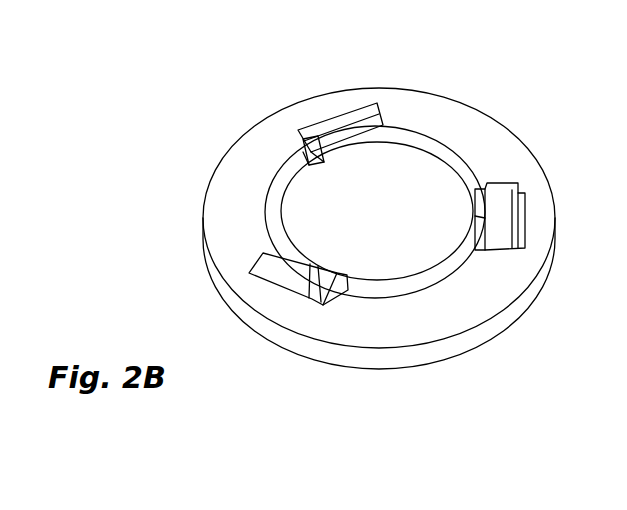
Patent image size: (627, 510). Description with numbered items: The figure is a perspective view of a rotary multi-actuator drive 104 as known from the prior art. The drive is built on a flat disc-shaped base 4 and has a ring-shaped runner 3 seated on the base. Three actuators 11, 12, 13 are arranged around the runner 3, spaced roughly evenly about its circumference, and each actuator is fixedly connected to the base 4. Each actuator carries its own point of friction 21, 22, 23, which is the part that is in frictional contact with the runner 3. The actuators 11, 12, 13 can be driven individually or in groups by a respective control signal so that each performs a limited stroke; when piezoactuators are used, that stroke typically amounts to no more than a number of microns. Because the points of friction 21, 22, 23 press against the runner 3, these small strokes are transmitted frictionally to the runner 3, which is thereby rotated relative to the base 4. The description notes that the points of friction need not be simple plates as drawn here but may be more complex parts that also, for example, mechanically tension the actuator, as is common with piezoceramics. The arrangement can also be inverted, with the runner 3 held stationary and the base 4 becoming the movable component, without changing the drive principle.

The rotary multi-actuator drive 104 is at (503, 41).
The base 4 is at (228, 190).
The runner 3 is at (421, 166).
The actuator 11 is at (270, 294).
The actuator 12 is at (545, 216).
The actuator 13 is at (340, 108).
The point of friction 21 is at (299, 329).
The point of friction 22 is at (543, 205).
The point of friction 23 is at (283, 124).